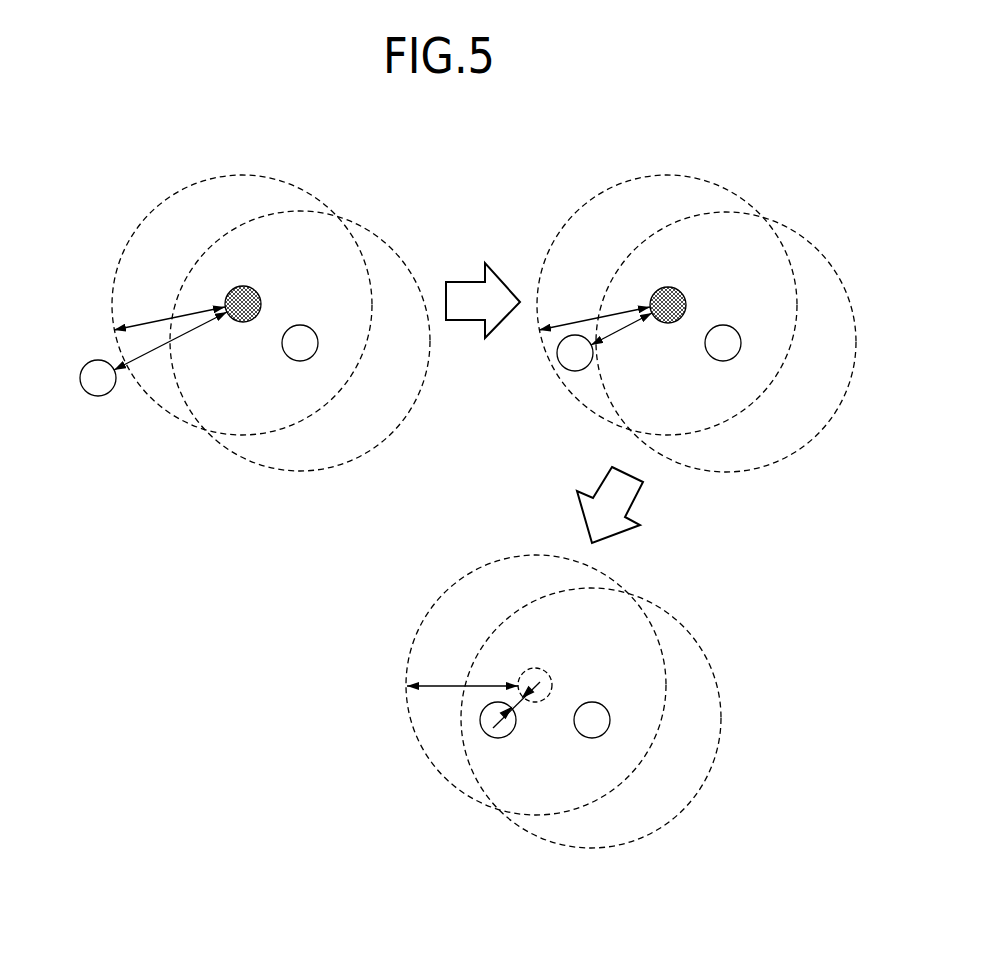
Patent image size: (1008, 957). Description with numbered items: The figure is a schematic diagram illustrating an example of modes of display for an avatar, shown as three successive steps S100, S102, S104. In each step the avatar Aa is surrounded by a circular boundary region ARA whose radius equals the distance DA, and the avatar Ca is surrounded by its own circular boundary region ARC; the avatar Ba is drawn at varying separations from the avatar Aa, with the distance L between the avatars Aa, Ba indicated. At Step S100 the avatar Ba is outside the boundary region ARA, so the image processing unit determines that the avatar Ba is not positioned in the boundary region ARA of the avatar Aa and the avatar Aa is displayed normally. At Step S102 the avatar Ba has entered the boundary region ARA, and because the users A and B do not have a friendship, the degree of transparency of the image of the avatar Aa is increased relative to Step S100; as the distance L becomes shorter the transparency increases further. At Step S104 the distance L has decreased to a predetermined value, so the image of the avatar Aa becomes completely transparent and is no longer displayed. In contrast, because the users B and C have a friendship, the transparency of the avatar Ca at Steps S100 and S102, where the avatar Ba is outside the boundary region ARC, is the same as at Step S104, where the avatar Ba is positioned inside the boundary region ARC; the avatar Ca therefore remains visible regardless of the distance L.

The boundary region ARA is at (214, 175).
The boundary region ARC is at (371, 235).
The avatar Aa is at (265, 282).
The avatar Ba is at (86, 403).
The avatar Ca is at (286, 366).
The distance DA is at (382, 487).
The distance L is at (547, 747).
The step S100 is at (343, 521).
The step S102 is at (751, 522).
The step S104 is at (588, 902).